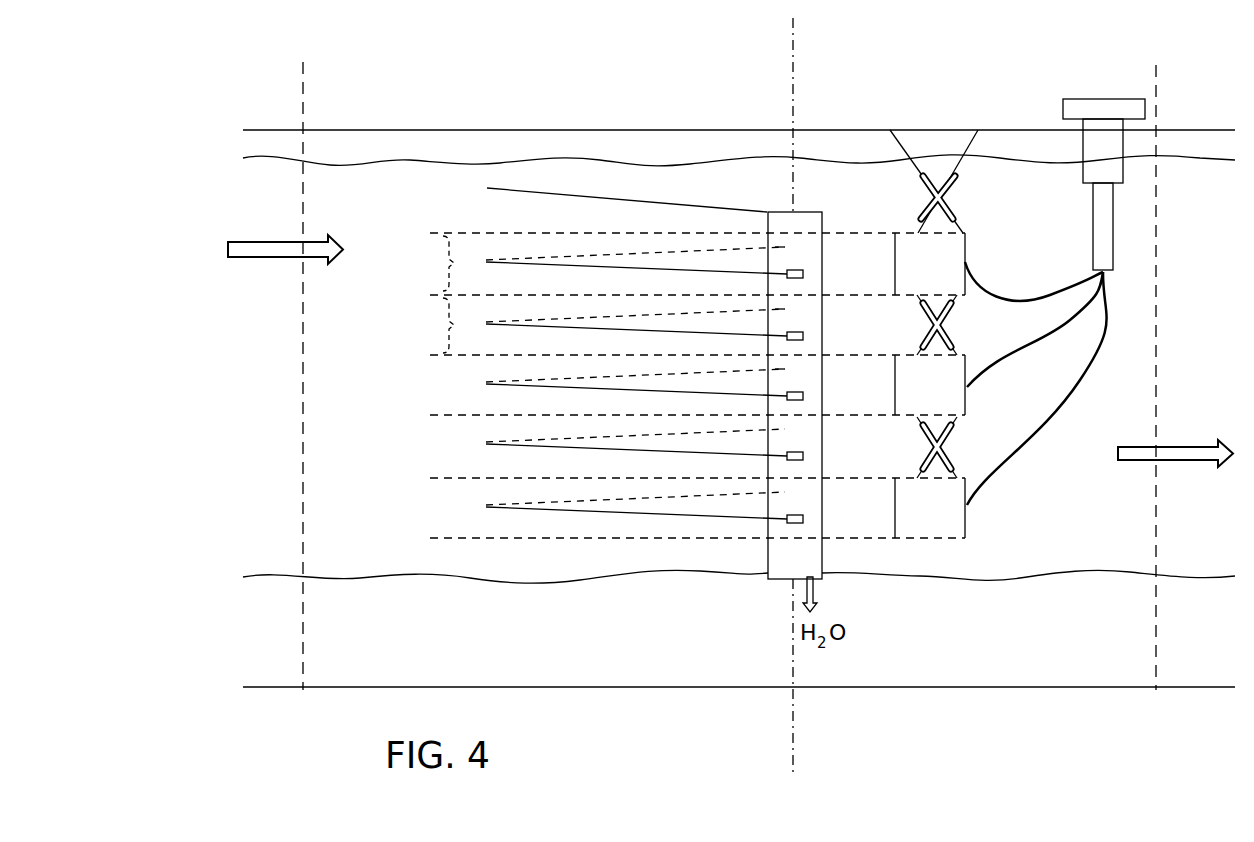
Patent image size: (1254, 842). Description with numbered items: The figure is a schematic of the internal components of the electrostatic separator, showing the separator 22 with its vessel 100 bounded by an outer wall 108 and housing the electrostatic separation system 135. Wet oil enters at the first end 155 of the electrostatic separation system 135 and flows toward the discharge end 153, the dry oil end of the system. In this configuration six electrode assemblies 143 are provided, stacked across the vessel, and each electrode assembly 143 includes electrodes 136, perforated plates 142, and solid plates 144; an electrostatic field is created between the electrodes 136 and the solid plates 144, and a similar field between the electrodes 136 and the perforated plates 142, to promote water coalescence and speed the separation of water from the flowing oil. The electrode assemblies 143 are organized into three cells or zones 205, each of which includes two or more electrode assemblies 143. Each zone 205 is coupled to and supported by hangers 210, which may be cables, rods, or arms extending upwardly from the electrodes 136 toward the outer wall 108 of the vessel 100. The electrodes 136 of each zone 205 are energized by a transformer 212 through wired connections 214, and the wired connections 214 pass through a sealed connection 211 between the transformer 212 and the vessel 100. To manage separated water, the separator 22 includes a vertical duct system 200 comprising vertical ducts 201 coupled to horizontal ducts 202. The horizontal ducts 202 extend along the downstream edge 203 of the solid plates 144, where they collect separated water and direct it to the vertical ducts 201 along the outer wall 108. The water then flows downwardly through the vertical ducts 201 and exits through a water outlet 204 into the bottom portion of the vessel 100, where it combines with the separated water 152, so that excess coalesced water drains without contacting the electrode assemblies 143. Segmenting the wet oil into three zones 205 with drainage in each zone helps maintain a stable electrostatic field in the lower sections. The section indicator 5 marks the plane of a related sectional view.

The separator 22 is at (258, 90).
The electrostatic separation system 135 is at (356, 214).
The first end 155 is at (420, 200).
The electrode assemblies 143 is at (428, 235).
The electrodes 136 is at (448, 294).
The perforated plates 142 is at (529, 262).
The solid plates 144 is at (529, 265).
The vertical duct system 200 is at (791, 209).
The vertical ducts 201 is at (767, 578).
The horizontal ducts 202 is at (803, 274).
The downstream edge 203 is at (797, 286).
The water outlet 204 is at (818, 585).
The zones 205 is at (993, 233).
The hangers 210 is at (949, 210).
The wired connections 214 is at (1063, 318).
The transformer 212 is at (1103, 108).
The sealed connection 211 is at (1220, 197).
The discharge end 153 is at (988, 151).
The separated water 152 is at (945, 610).
The outer wall 108 is at (707, 690).
The vessel 100 is at (948, 692).
The section line 5- 5 is at (793, 16).